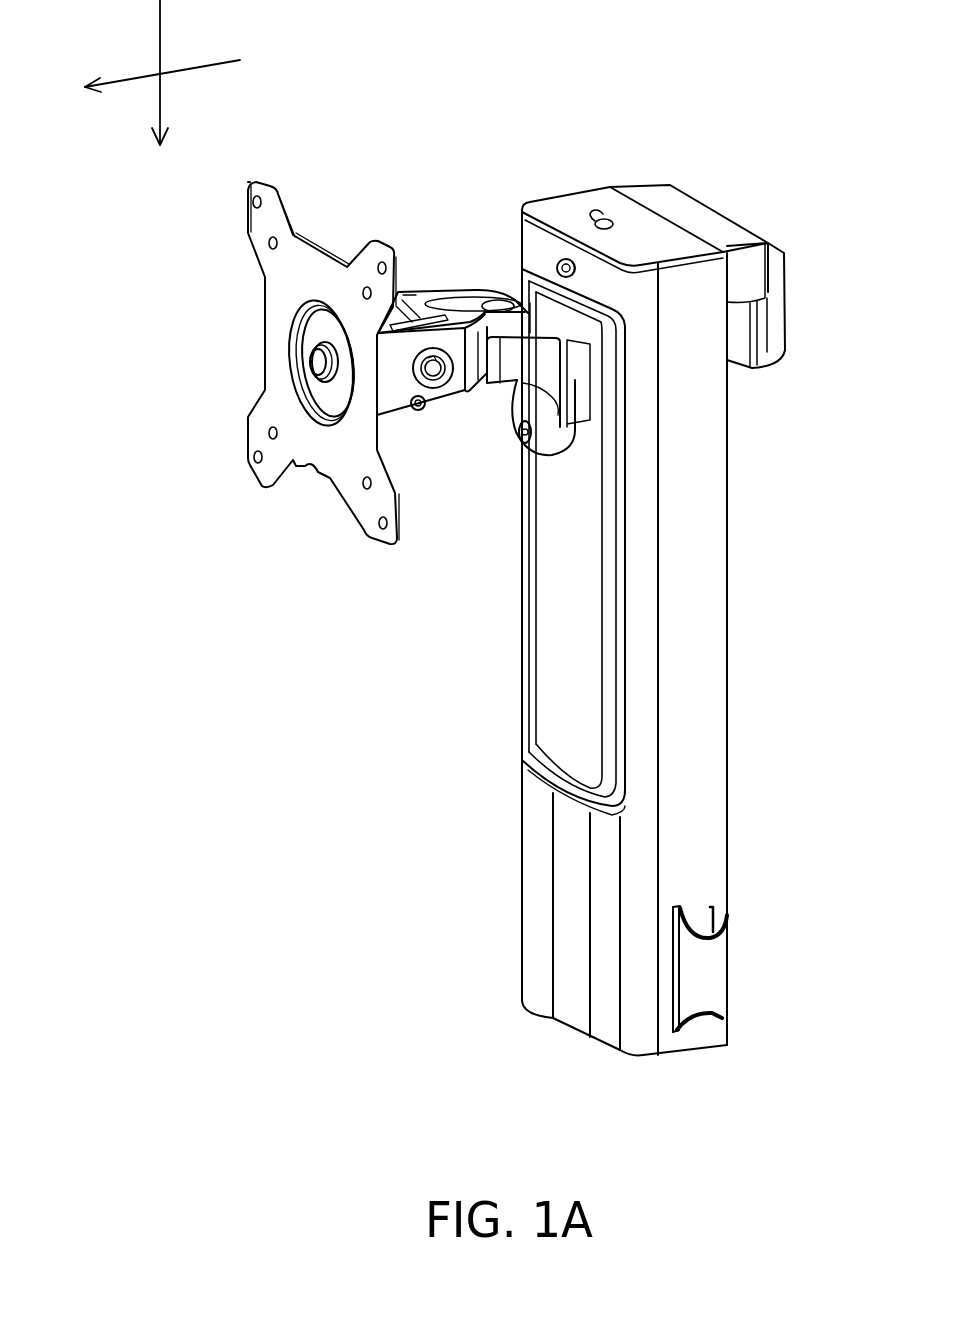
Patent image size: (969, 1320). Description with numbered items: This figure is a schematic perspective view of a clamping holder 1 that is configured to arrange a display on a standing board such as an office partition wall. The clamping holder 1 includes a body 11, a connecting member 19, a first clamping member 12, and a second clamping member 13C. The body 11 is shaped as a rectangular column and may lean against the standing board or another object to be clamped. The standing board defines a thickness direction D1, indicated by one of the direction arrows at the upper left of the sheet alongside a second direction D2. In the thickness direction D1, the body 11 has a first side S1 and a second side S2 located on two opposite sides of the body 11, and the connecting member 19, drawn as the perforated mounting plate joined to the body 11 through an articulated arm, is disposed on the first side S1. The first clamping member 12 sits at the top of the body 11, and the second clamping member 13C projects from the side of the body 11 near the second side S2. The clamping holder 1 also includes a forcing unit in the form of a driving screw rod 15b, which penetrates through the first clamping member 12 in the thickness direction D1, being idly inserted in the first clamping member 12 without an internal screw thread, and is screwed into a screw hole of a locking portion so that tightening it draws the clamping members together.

The clamping holder 1 is at (377, 720).
The body 11 is at (537, 915).
The first clamping member 12 is at (683, 203).
The second clamping member 13C is at (773, 322).
The driving screw rod 15b is at (557, 260).
The connecting member 19 is at (278, 295).
The first side S1 is at (505, 218).
The second side S2 is at (748, 418).
The thickness direction D1 is at (147, 82).
The second direction D2 is at (155, 96).